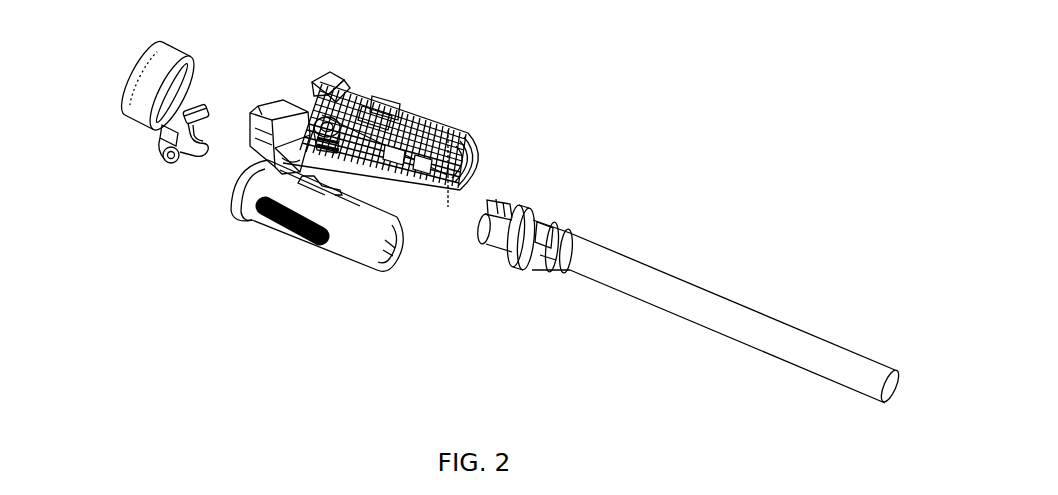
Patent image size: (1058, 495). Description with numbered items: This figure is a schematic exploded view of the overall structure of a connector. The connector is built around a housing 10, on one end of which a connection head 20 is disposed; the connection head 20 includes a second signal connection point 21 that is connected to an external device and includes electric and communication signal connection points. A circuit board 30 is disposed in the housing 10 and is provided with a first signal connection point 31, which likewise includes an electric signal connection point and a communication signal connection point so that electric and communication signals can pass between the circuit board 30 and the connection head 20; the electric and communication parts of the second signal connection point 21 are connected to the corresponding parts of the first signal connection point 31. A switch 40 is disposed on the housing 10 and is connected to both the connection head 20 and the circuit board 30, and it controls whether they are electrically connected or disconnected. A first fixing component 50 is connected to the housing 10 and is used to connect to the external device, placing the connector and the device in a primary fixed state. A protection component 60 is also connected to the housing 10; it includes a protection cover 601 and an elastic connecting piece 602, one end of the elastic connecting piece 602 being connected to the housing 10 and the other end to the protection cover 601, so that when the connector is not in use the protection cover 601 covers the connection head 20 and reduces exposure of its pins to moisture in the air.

The housing 10 is at (370, 233).
The connection head 20 is at (264, 110).
The second signal connection point 21 is at (285, 153).
The circuit board 30 is at (398, 114).
The first signal connection point 31 is at (383, 108).
The switch 40 is at (384, 90).
The first fixing component 50 is at (324, 102).
The protection component 60 is at (79, 144).
The protection cover 601 is at (148, 82).
The elastic connecting piece 602 is at (178, 162).